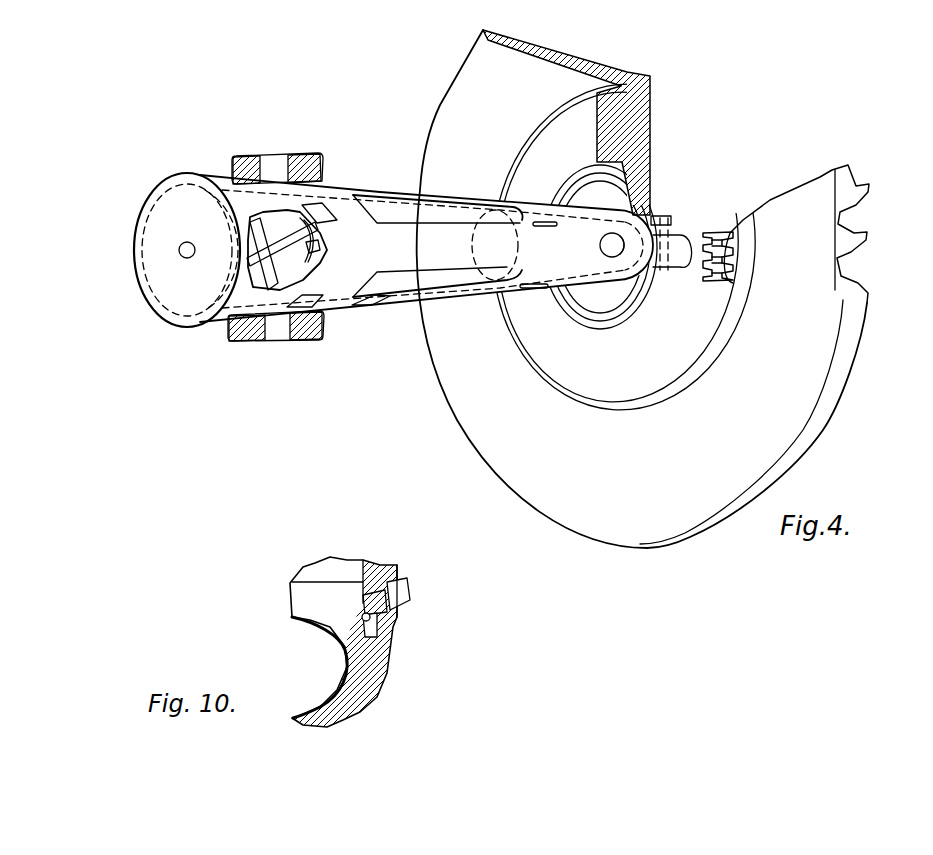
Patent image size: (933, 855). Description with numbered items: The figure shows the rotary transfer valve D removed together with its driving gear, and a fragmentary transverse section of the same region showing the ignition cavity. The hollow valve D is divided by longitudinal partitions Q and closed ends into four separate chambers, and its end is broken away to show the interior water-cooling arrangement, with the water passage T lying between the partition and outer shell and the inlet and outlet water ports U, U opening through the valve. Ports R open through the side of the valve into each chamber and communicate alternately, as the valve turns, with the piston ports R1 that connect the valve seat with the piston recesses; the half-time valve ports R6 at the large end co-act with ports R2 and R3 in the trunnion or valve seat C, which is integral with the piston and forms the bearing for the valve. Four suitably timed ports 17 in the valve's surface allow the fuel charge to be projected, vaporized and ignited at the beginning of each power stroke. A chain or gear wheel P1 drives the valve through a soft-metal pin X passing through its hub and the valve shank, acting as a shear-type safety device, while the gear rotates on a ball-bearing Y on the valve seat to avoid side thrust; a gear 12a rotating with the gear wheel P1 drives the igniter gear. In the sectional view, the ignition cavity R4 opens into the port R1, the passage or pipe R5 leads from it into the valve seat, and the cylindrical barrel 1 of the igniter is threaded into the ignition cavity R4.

In FIG. 4, the rotary transfer valve D is at (150, 193).
In FIG. 4, the water passage T is at (257, 220).
In FIG. 4, the valve seat port R2 is at (282, 160).
In FIG. 4, the valve seat port R3 is at (277, 340).
In FIG. 4, the half-time valve port R6 is at (322, 209).
In FIG. 4, the valve port R is at (365, 303).
In FIG. 4, the longitudinal partition Q is at (313, 250).
In FIG. 4, the water port U is at (557, 307).
In FIG. 4, the trunnion C is at (374, 246).
In FIG. 10, the trunnion C is at (390, 683).
In FIG. 4, the timed port 17 is at (545, 220).
In FIG. 10, the timed port 17 is at (397, 643).
In FIG. 4, the ball-bearing Y is at (652, 153).
In FIG. 4, the pin X is at (663, 217).
In FIG. 4, the gear wheel P1 is at (853, 183).
In FIG. 4, the gear 12a is at (733, 258).
In FIG. 10, the piston port R1 is at (313, 592).
In FIG. 10, the ignition cavity R4 is at (363, 603).
In FIG. 10, the passage or pipe R5 is at (363, 613).
In FIG. 10, the cylindrical barrel 1 is at (410, 603).